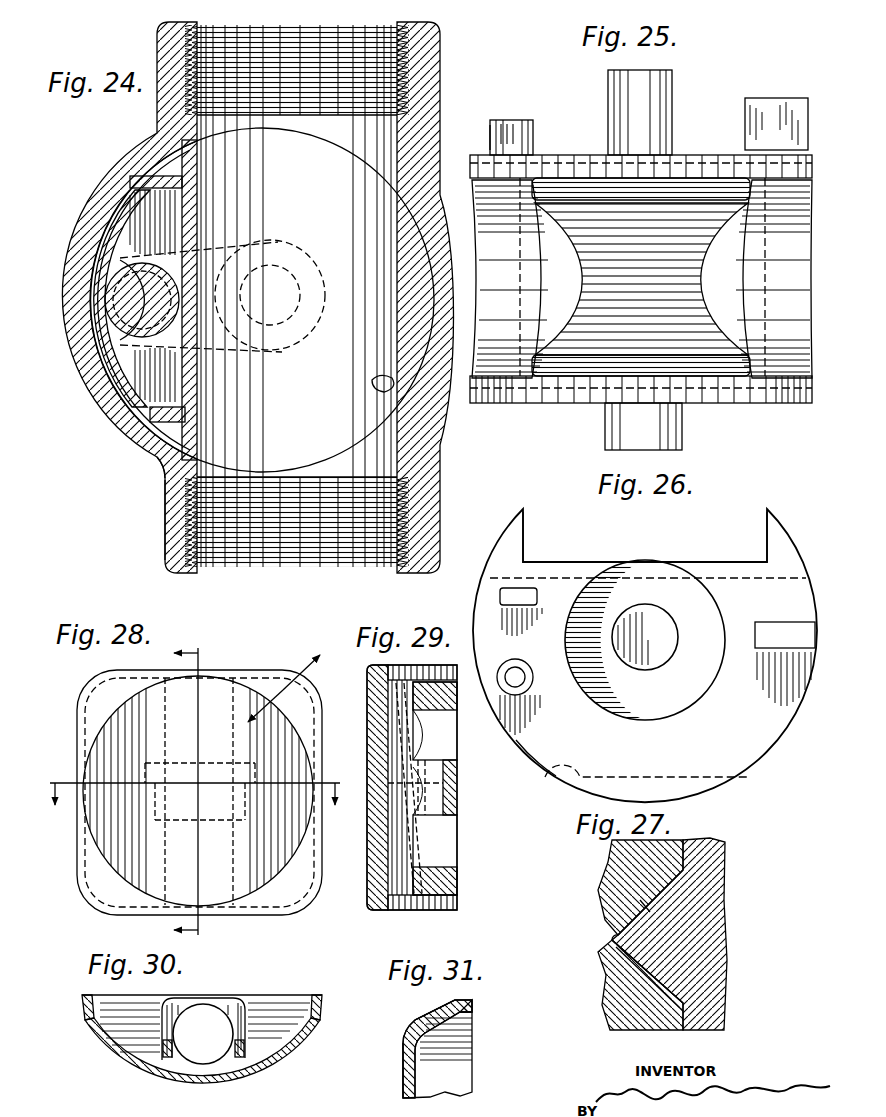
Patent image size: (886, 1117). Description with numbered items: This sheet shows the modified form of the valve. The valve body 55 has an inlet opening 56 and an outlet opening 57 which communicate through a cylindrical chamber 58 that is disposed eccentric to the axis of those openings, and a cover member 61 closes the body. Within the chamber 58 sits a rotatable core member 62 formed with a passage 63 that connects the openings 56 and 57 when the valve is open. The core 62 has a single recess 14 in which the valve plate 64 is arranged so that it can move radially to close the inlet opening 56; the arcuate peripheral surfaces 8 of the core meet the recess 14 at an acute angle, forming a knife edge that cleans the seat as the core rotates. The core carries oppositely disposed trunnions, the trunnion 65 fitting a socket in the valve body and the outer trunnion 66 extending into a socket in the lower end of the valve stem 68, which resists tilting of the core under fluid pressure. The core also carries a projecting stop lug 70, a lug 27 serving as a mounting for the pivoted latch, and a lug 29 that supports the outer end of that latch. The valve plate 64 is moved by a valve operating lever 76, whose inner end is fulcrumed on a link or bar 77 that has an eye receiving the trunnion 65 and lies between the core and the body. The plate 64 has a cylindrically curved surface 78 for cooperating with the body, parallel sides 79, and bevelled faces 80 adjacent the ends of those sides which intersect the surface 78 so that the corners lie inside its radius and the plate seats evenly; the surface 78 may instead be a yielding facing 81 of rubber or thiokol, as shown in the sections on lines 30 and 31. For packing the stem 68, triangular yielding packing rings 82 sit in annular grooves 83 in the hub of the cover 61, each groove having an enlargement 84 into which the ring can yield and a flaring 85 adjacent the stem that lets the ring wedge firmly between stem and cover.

In FIG. 24, the arcuate peripheral surfaces 8 is at (180, 152).
In FIG. 25, the arcuate peripheral surfaces 8 is at (522, 400).
In FIG. 26, the arcuate peripheral surfaces 8 is at (510, 746).
In FIG. 24, the recess 14 is at (160, 182).
In FIG. 26, the recess 14 is at (526, 539).
In FIG. 25, the lug 27 is at (491, 130).
In FIG. 26, the lug 27 is at (522, 665).
In FIG. 25, the lug 29 is at (535, 133).
In FIG. 26, the lug 29 is at (538, 598).
In FIG. 28, the lug 29 is at (207, 791).
In FIG. 28, the section line 30- 30 is at (198, 779).
In FIG. 28, the section line 31- 31 is at (258, 741).
In FIG. 24, the valve body 55 is at (166, 508).
In FIG. 24, the inlet opening 56 is at (398, 72).
In FIG. 24, the outlet opening 57 is at (250, 560).
In FIG. 24, the cylindrical chamber 58 is at (160, 447).
In FIG. 27, the cover member 61 is at (607, 983).
In FIG. 24, the rotatable core member 62 is at (172, 156).
In FIG. 25, the rotatable core member 62 is at (743, 396).
In FIG. 26, the rotatable core member 62 is at (781, 732).
In FIG. 24, the passage 63 is at (380, 387).
In FIG. 25, the passage 63 is at (496, 227).
In FIG. 26, the passage 63 is at (546, 771).
In FIG. 24, the valve plate 64 is at (148, 404).
In FIG. 28, the valve plate 64 is at (315, 856).
In FIG. 29, the valve plate 64 is at (446, 864).
In FIG. 30, the valve plate 64 is at (258, 1000).
In FIG. 31, the valve plate 64 is at (466, 1076).
In FIG. 24, the trunnion 65 is at (292, 262).
In FIG. 25, the trunnion 65 is at (606, 431).
In FIG. 25, the outer trunnion 66 is at (666, 100).
In FIG. 26, the outer trunnion 66 is at (659, 622).
In FIG. 27, the valve stem 68 is at (710, 871).
In FIG. 25, the projecting lug 70 is at (756, 126).
In FIG. 26, the projecting lug 70 is at (769, 629).
In FIG. 24, the valve operating lever 76 is at (125, 308).
In FIG. 24, the link or bar 77 is at (167, 400).
In FIG. 28, the cylindrically curved surface 78 is at (114, 851).
In FIG. 30, the cylindrically curved surface 78 is at (273, 1064).
In FIG. 31, the cylindrically curved surface 78 is at (403, 1083).
In FIG. 24, the sides 79 is at (156, 420).
In FIG. 28, the sides 79 is at (78, 813).
In FIG. 30, the sides 79 is at (85, 1008).
In FIG. 28, the bevelled faces 80 is at (100, 700).
In FIG. 31, the bevelled faces 80 is at (443, 1012).
In FIG. 28, the yielding facing 81 is at (222, 692).
In FIG. 30, the yielding facing 81 is at (149, 1073).
In FIG. 31, the yielding facing 81 is at (402, 1056).
In FIG. 27, the packing rings 82 is at (681, 952).
In FIG. 27, the annular grooves 83 is at (636, 911).
In FIG. 27, the enlargement 84 is at (612, 939).
In FIG. 27, the flaring 85 is at (674, 870).